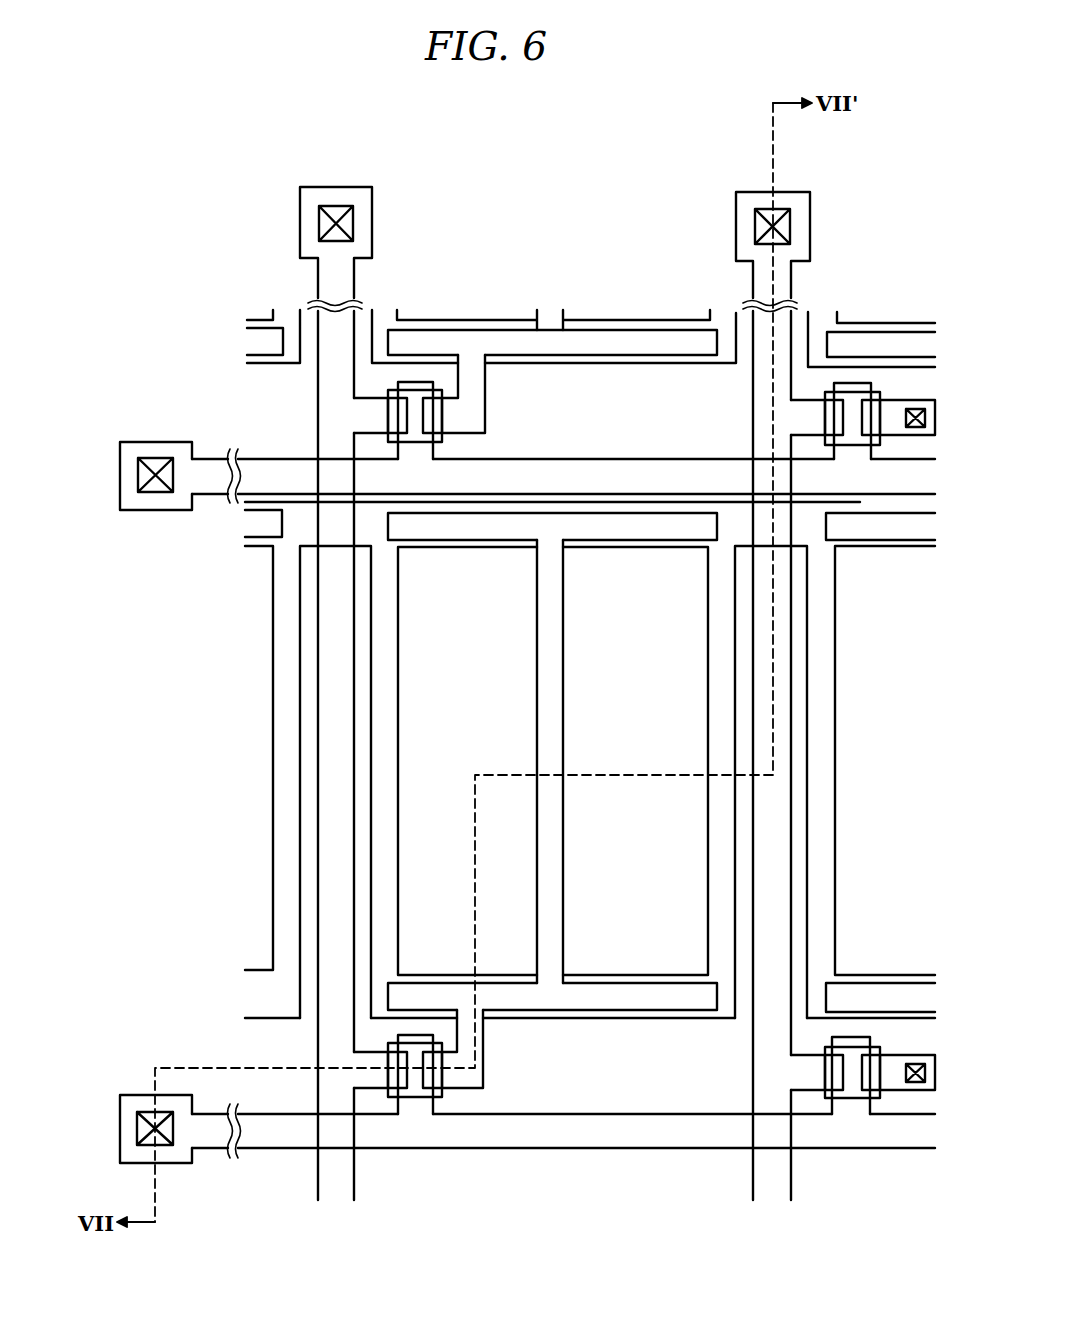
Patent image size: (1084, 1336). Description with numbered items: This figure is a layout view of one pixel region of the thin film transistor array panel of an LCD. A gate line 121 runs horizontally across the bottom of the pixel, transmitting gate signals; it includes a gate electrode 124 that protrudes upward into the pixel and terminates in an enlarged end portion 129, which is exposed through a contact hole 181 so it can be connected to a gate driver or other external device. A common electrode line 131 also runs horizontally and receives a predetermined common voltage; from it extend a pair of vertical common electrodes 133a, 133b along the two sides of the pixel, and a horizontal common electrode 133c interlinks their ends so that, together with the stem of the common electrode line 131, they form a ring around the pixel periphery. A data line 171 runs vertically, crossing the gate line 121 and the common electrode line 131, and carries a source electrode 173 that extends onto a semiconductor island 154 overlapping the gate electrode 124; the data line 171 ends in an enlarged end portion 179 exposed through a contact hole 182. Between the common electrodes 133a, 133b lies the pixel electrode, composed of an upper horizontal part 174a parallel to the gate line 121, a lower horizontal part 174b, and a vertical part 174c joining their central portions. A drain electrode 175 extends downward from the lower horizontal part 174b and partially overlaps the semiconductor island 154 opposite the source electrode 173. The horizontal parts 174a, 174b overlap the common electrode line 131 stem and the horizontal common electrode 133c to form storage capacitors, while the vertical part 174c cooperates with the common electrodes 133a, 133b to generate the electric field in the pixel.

The gate line 121 is at (615, 1150).
The gate electrode 124 is at (398, 383).
The end portion 129 is at (120, 1110).
The common electrode line 131 is at (527, 502).
The common electrode 133a is at (371, 697).
The common electrode 133b is at (735, 708).
The common electrode 133c is at (716, 1020).
The semiconductor island 154 is at (418, 1098).
The data line 171 is at (318, 752).
The source electrode 173 is at (370, 1089).
The upper horizontal part 174a is at (621, 512).
The lower horizontal part 174b is at (658, 1012).
The vertical part 174c is at (567, 950).
The drain electrode 175 is at (483, 1089).
The end portion 179 is at (798, 192).
The contact hole 181 is at (137, 1142).
The contact hole 182 is at (767, 209).